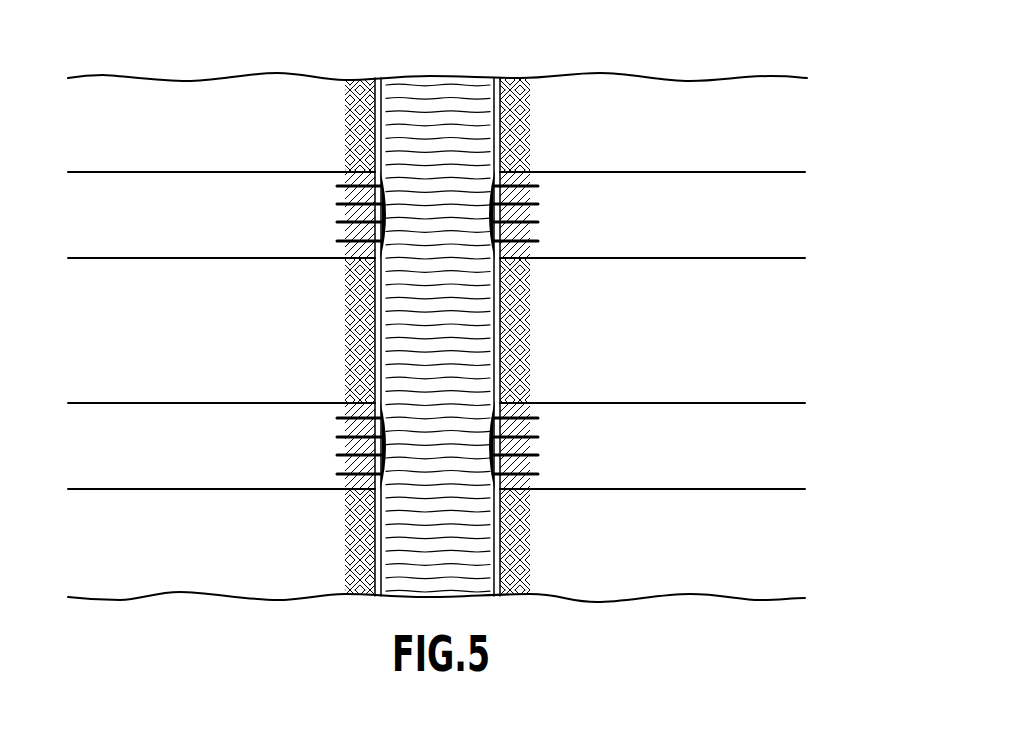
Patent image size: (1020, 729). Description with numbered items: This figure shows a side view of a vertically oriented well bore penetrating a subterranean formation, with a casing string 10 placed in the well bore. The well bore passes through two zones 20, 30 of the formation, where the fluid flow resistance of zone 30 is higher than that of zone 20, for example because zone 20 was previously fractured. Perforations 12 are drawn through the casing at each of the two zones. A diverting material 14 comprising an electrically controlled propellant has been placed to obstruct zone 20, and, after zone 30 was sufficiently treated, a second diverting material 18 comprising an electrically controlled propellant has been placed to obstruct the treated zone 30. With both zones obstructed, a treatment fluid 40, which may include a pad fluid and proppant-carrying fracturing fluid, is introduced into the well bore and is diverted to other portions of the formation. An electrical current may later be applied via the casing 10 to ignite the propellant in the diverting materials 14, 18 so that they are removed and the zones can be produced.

The casing string 10 is at (512, 102).
The perforations 12 is at (352, 197).
The diverting material 14 is at (380, 182).
The diverting material 18 is at (493, 418).
The zone 20 is at (245, 230).
The zone 30 is at (603, 457).
The treatment fluid 40 is at (428, 90).